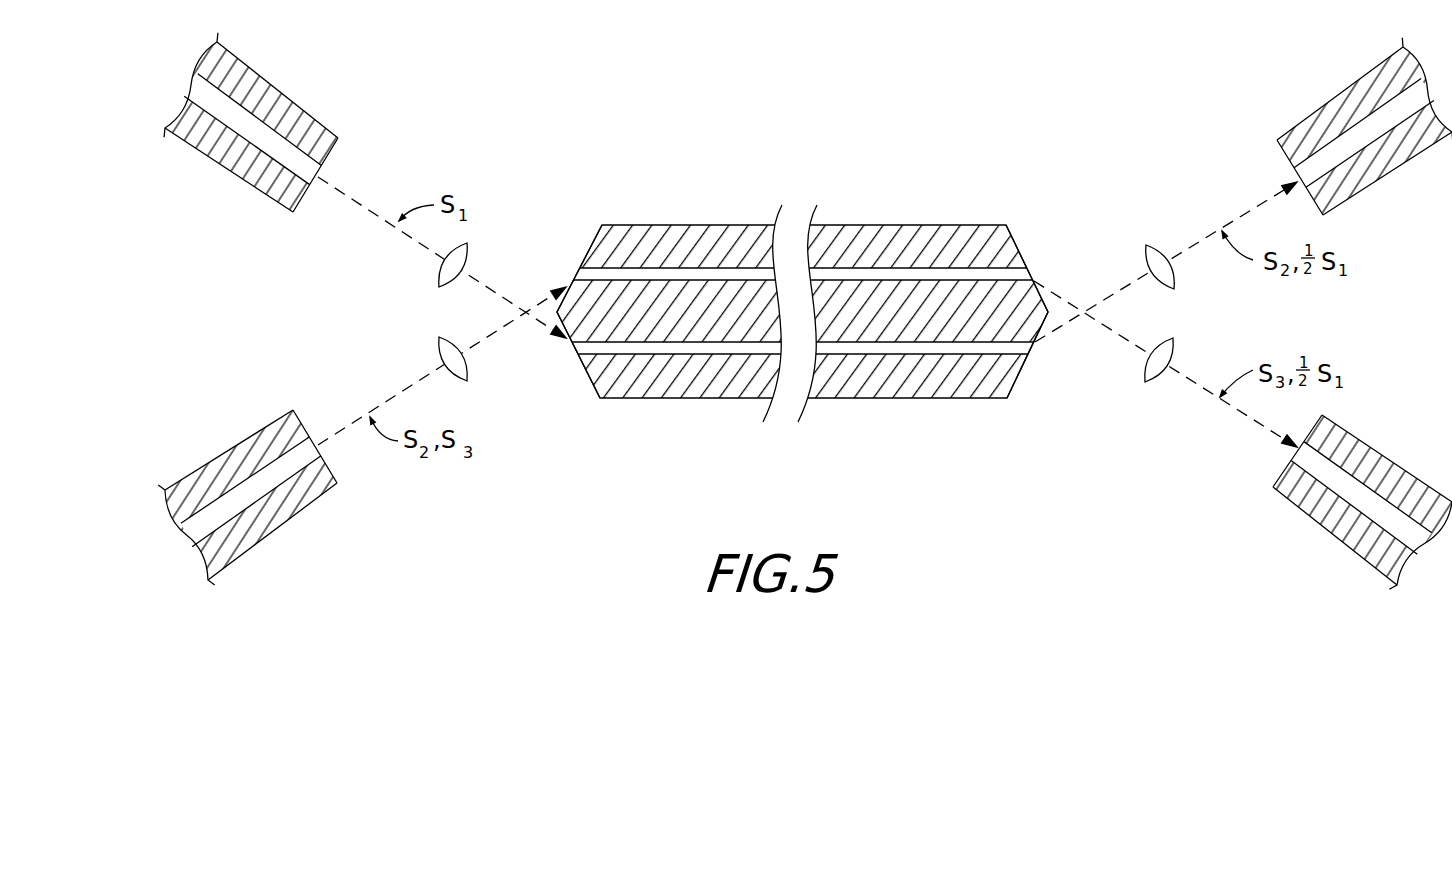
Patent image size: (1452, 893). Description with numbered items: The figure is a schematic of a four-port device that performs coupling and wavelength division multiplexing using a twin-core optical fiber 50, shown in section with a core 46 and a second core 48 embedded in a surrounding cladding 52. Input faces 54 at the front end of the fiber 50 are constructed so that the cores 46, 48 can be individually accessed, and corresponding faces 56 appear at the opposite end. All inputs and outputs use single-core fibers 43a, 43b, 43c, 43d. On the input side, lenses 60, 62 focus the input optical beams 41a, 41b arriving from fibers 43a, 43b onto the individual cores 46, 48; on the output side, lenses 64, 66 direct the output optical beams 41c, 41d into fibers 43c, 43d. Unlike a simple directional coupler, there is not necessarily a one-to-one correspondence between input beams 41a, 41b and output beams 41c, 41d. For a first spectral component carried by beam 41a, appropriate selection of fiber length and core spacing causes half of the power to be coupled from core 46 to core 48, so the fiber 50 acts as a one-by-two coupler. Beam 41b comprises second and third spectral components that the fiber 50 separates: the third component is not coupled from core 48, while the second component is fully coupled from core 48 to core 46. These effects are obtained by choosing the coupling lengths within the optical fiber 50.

The input optical beam 41a is at (349, 195).
The input optical beam 41b is at (392, 396).
The output optical beam 41c is at (1120, 293).
The output optical beam 41d is at (1122, 338).
The single-core fiber 43a is at (271, 90).
The single-core fiber 43b is at (252, 438).
The single-core fiber 43c is at (1357, 90).
The single-core fiber 43d is at (1355, 543).
The core 46 is at (887, 353).
The second core 48 is at (884, 278).
The optical fiber 50 is at (718, 205).
The cladding 52 is at (680, 377).
The input faces 54 is at (590, 248).
The output end faces 56 is at (1017, 247).
The lens 60 is at (433, 271).
The lens 62 is at (453, 378).
The lens 64 is at (1157, 243).
The lens 66 is at (1162, 383).